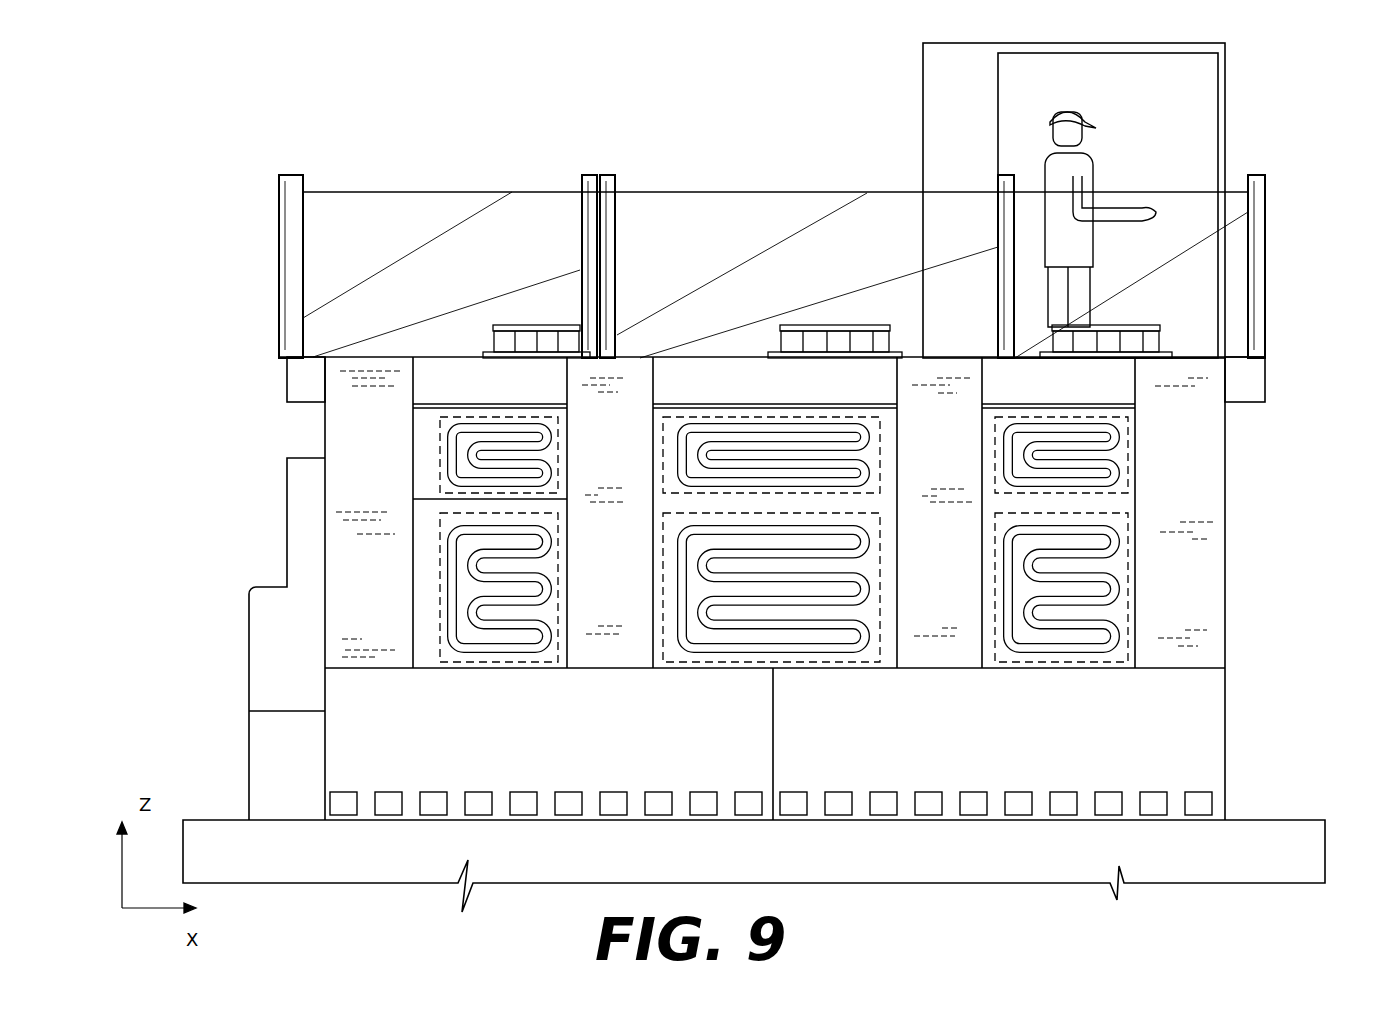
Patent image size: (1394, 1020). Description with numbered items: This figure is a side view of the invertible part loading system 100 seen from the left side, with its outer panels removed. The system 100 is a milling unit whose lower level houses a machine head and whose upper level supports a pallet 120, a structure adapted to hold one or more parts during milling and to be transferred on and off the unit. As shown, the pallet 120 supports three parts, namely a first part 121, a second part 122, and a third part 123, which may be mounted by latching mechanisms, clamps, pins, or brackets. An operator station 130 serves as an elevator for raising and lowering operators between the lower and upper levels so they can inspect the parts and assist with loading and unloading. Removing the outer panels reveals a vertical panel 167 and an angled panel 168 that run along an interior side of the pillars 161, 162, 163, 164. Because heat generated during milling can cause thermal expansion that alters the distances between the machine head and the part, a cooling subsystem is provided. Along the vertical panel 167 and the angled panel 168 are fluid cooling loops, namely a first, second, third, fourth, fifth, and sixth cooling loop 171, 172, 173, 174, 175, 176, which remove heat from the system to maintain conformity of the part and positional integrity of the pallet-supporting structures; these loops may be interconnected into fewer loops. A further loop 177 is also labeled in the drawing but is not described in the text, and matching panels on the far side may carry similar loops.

The invertible part loading system 100 is at (330, 93).
The operator station 130 is at (928, 88).
The third part 123 is at (538, 325).
The second part 122 is at (835, 325).
The first part 121 is at (1160, 330).
The pallet 120 is at (755, 372).
The pillar 163 is at (633, 368).
The pillar 162 is at (945, 365).
The pillar 164 is at (337, 387).
The pillar 161 is at (1218, 380).
The angled panel 168 is at (420, 452).
The vertical panel 167 is at (420, 540).
The fifth cooling loop 175 is at (552, 460).
The sixth cooling loop 176 is at (560, 533).
The second cooling loop 172 is at (547, 625).
The third cooling loop 173 is at (870, 458).
The fourth cooling loop 174 is at (870, 590).
The first cooling loop 171 is at (1118, 455).
The lower heating coil 177 is at (1122, 563).